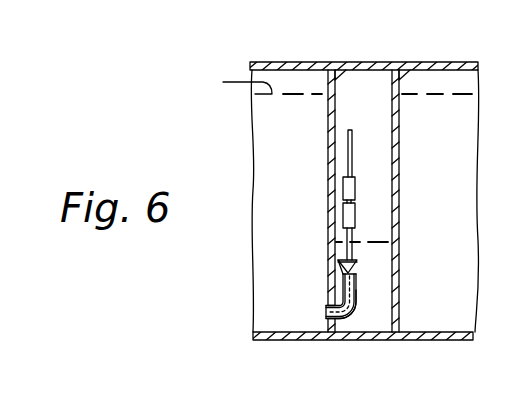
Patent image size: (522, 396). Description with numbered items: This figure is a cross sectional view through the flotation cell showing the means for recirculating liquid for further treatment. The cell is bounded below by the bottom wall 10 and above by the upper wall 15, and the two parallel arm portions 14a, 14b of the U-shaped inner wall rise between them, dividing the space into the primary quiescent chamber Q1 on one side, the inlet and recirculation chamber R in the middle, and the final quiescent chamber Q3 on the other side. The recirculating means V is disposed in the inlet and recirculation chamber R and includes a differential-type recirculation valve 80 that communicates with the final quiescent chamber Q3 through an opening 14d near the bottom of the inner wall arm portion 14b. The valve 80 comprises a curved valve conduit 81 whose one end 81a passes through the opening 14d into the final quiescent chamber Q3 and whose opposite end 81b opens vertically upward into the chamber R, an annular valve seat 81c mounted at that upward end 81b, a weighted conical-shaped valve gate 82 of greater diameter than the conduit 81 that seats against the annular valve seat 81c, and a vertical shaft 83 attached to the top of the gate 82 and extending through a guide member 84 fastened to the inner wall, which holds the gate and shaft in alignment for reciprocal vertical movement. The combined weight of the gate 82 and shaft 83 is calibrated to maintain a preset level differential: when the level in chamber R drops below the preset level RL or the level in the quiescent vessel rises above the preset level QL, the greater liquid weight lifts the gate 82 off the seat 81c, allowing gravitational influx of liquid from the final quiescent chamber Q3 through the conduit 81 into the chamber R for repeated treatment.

The bottom wall 10 is at (293, 341).
The upper wall 15 is at (280, 62).
The arm portion of U-shaped inner wall 14a is at (405, 62).
The arm portion of U-shaped inner wall 14b is at (343, 62).
The opening in U-shaped inner wall 14d is at (328, 304).
The differential-type recirculation valve 80 is at (357, 292).
The curved valve conduit 81 is at (354, 306).
The conduit end 81a is at (338, 321).
The upward end of conduit 81b is at (352, 270).
The annular valve seat 81c is at (339, 262).
The weighted conical-shaped valve gate 82 is at (358, 260).
The vertical shaft 83 is at (343, 207).
The guide member 84 is at (343, 182).
The pre-set liquid level in quiescent vessel QL is at (328, 83).
The inlet and recirculation chamber R is at (372, 98).
The primary quiescent chamber Q1 is at (447, 160).
The final quiescent chamber Q3 is at (302, 163).
The recirculating means V is at (367, 225).
The pre-set liquid level in recirculation chamber RL is at (375, 242).